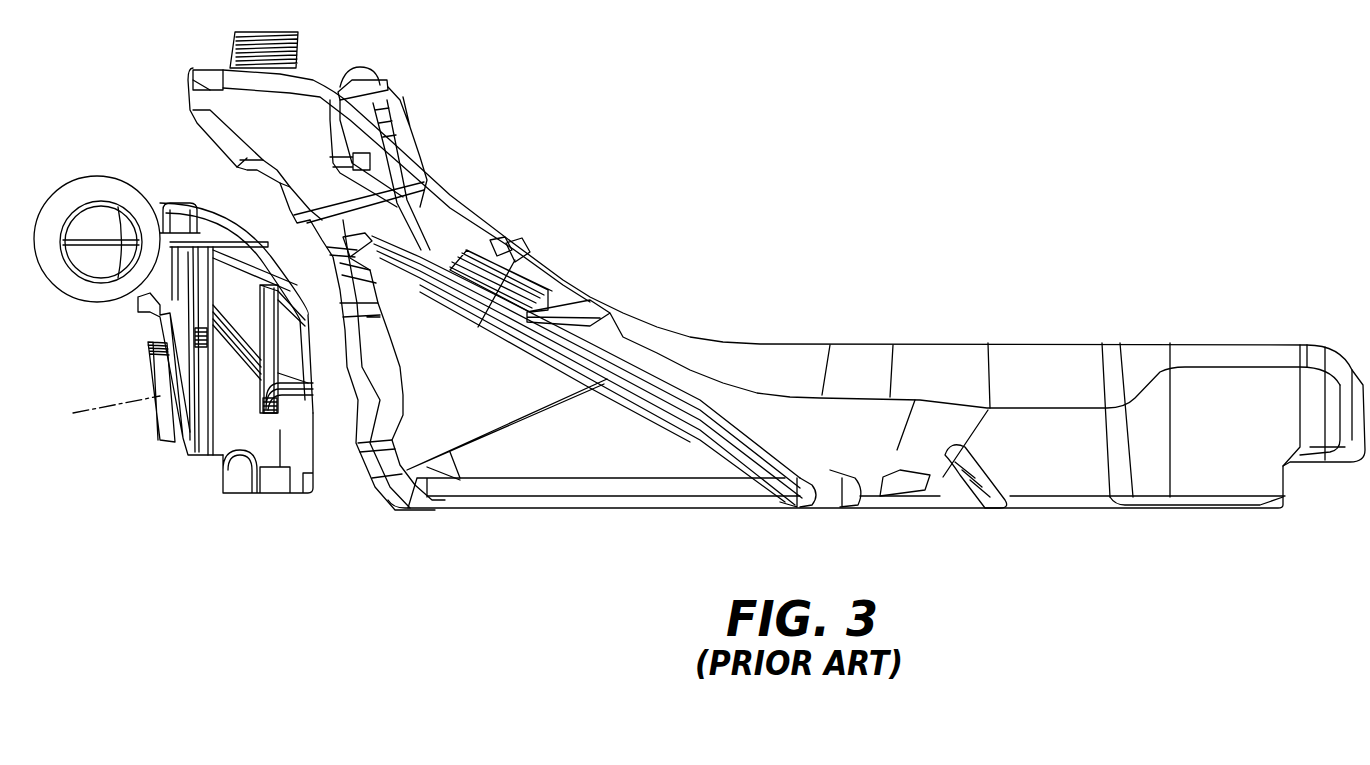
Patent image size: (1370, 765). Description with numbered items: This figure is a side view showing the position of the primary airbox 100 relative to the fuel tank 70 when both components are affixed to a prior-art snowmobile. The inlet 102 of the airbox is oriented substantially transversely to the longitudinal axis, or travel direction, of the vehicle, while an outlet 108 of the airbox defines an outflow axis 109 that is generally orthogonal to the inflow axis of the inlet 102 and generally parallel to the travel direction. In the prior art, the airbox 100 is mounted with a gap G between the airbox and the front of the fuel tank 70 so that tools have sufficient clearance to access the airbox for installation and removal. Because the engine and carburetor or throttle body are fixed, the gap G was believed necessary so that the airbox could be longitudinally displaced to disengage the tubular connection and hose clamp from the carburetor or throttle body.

The fuel tank 70 is at (815, 338).
The primary airbox 100 is at (264, 500).
The inlet 102 is at (99, 221).
The outlet 108 is at (156, 417).
The outflow axis 109 is at (100, 404).
The gap G is at (313, 344).